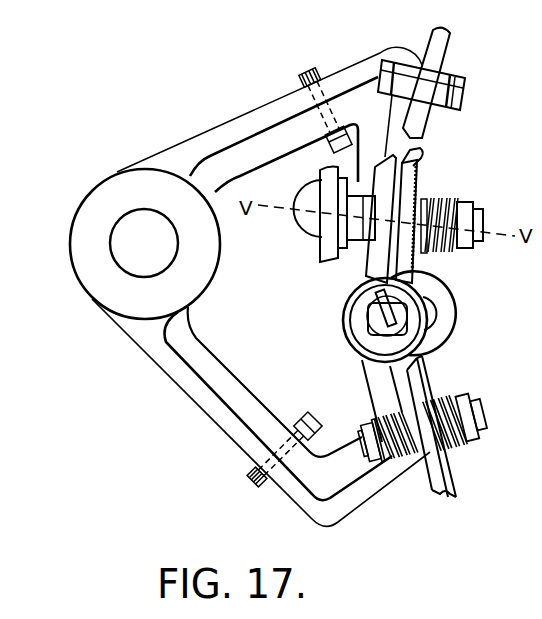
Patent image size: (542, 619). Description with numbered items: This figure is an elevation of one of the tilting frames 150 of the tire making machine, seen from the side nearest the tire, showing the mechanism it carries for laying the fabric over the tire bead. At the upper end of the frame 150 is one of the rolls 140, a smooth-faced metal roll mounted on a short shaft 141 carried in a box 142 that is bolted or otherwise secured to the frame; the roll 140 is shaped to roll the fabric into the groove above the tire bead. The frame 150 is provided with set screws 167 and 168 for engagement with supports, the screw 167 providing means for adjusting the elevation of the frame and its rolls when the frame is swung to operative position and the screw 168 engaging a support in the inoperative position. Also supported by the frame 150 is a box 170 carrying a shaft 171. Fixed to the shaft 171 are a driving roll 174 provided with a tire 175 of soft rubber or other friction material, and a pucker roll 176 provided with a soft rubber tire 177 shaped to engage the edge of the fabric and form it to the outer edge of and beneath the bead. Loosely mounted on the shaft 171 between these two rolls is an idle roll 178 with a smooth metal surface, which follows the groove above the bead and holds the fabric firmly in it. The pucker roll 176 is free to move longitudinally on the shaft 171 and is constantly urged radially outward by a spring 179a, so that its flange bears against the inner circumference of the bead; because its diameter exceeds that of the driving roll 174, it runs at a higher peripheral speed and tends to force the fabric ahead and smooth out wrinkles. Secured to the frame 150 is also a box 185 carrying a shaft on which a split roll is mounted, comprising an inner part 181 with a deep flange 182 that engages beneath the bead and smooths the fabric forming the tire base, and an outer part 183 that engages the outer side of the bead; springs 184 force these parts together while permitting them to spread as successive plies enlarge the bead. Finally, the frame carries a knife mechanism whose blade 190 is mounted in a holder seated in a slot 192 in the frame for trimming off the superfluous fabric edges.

The roll 140 is at (447, 35).
The short shaft 141 is at (438, 82).
The box 142 is at (467, 81).
The tilting frame 150 is at (255, 120).
The set screw 167 is at (250, 475).
The set screw 168 is at (302, 72).
The box 170 is at (472, 208).
The shaft 171 is at (438, 200).
The driving roll 174 is at (318, 248).
The tire 175 is at (318, 253).
The pucker roll 176 is at (423, 180).
The soft rubber tire 177 is at (416, 152).
The idle roll 178 is at (370, 263).
The spring 179a is at (438, 248).
The inner part 181 is at (445, 492).
The deep flange 182 is at (456, 495).
The outer part 183 is at (430, 475).
The spring 184 is at (381, 412).
The box 185 is at (477, 435).
The blade 190 is at (386, 314).
The slot 192 is at (432, 320).